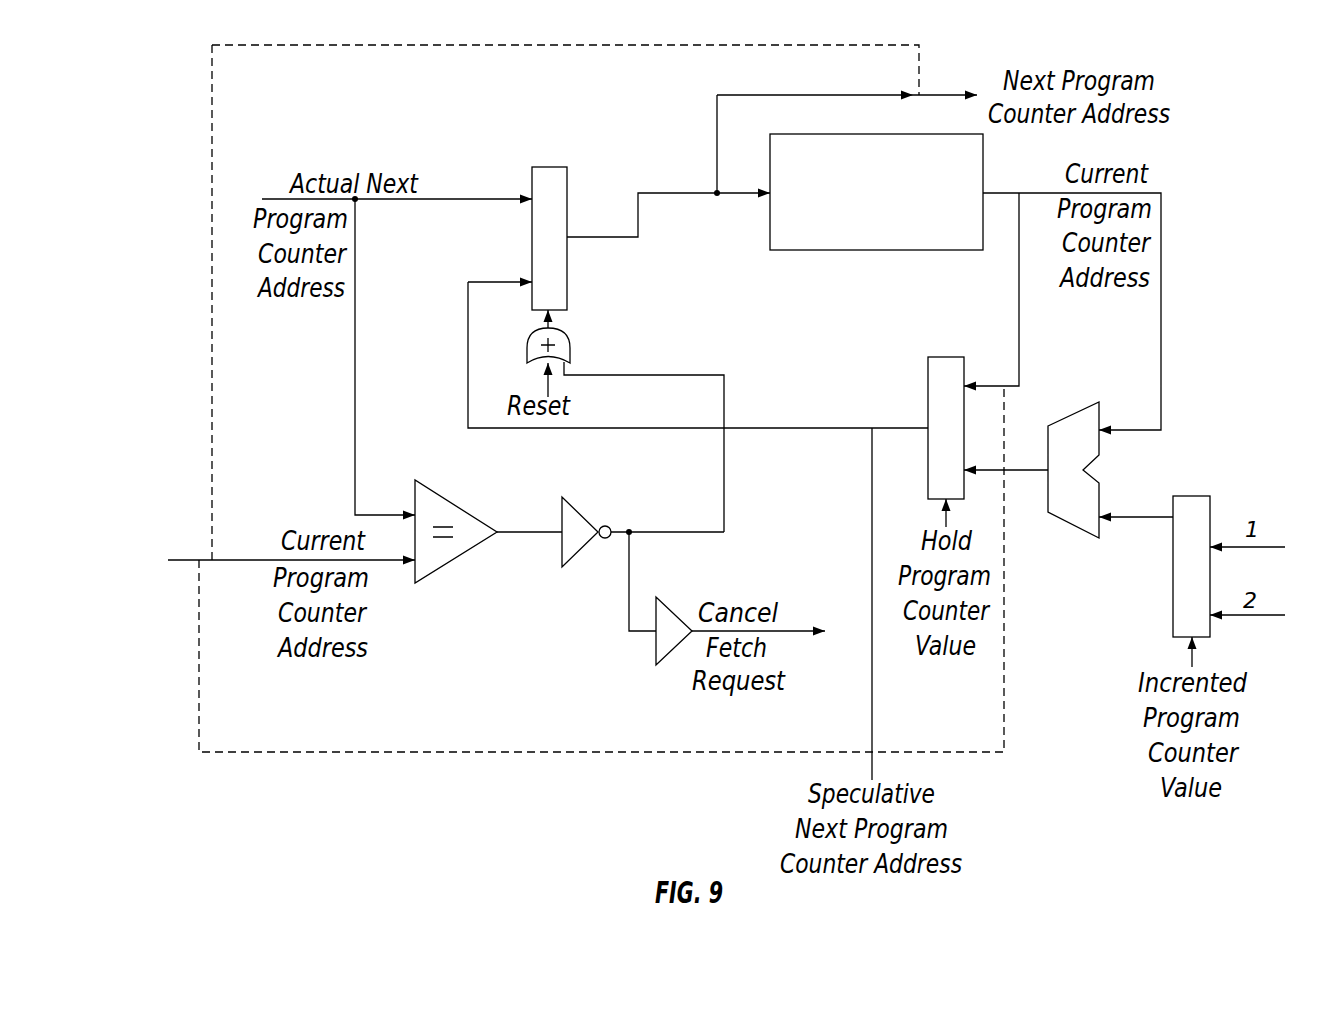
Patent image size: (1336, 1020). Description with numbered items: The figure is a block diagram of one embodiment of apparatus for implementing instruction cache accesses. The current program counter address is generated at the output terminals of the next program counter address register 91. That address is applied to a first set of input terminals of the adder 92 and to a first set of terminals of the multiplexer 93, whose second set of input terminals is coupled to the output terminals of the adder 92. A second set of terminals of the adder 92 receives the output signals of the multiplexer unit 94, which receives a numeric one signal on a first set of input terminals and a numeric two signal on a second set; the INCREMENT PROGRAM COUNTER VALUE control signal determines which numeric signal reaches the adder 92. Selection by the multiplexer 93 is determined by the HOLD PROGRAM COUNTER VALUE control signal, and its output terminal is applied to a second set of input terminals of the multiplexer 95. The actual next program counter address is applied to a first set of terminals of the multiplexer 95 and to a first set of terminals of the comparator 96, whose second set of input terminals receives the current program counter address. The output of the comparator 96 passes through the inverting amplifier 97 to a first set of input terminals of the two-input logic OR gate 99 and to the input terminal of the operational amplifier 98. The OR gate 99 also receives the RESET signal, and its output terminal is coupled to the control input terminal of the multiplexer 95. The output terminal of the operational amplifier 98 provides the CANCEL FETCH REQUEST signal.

The next program counter address register 91 is at (877, 251).
The adder 92 is at (1075, 410).
The multiplexer 93 is at (945, 357).
The multiplexer unit 94 is at (1193, 496).
The multiplexer 95 is at (550, 166).
The comparator 96 is at (457, 502).
The inverting amplifier 97 is at (583, 512).
The operational amplifier 98 is at (683, 600).
The 2-input logic OR gate 99 is at (567, 335).